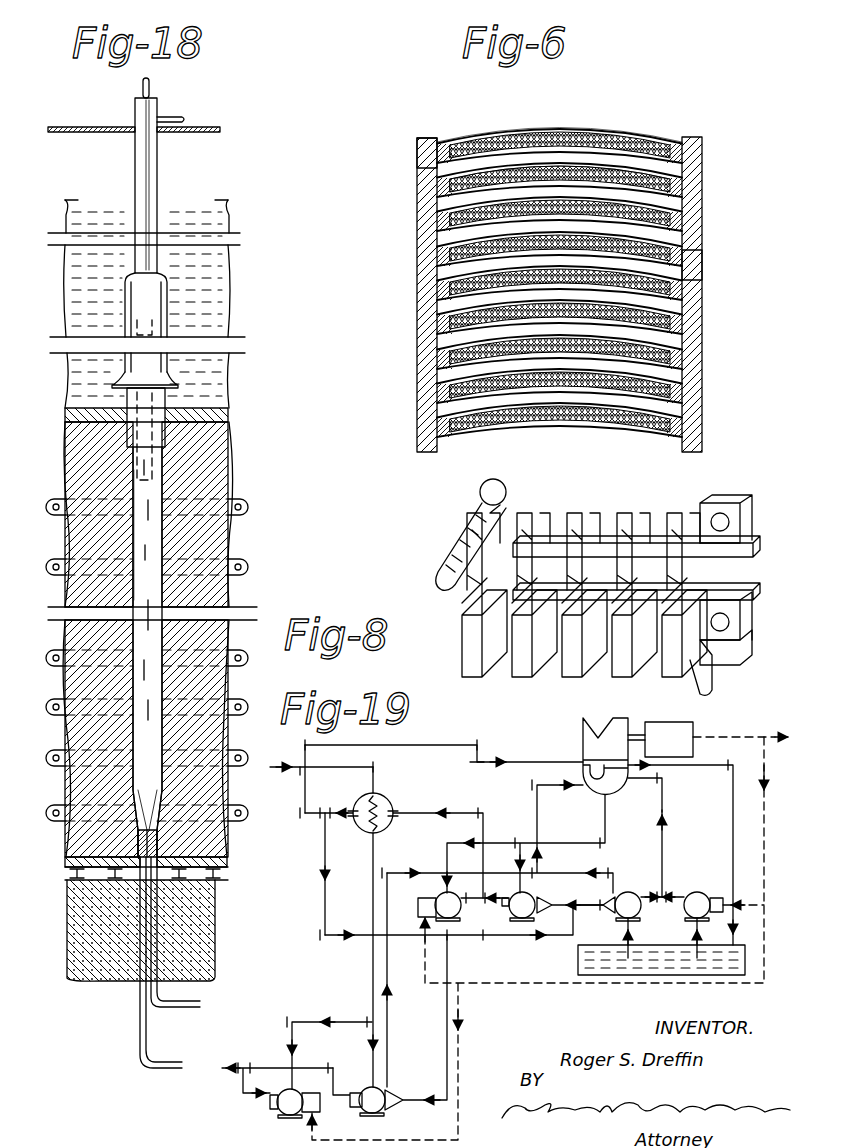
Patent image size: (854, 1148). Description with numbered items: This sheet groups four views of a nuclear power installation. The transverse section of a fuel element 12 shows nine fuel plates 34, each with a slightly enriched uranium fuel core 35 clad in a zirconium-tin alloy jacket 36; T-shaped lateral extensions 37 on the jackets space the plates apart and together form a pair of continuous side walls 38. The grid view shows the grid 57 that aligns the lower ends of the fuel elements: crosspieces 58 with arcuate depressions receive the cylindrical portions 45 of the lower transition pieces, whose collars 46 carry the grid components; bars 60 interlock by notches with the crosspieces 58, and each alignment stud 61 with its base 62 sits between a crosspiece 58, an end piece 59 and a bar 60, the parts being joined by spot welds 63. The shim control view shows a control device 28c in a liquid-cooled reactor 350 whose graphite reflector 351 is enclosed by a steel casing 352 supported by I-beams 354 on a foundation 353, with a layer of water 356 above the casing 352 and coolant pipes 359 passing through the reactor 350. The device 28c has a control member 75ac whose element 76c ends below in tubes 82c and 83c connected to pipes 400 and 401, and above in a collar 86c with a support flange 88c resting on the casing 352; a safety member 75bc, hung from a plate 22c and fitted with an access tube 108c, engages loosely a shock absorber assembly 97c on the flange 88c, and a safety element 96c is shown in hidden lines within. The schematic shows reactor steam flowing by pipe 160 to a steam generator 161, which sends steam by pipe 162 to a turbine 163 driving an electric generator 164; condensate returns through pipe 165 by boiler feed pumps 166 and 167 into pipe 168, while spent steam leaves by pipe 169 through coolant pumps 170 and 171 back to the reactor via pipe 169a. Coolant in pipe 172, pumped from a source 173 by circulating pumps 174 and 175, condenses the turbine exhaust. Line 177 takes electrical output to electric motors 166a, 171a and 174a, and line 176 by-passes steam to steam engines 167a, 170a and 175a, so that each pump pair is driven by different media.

In FIG. 6, the fuel element 12 is at (702, 125).
In FIG. 6, the fuel plate 34 is at (593, 128).
In FIG. 6, the fuel core 35 is at (536, 172).
In FIG. 6, the zirconium-tin alloy jacket 36 is at (470, 142).
In FIG. 6, the lateral extension 37 is at (701, 201).
In FIG. 6, the side wall 38 is at (705, 281).
In FIG. 8, the cylindrical portion 45 is at (505, 492).
In FIG. 8, the collar 46 is at (440, 562).
In FIG. 8, the grid 57 is at (612, 508).
In FIG. 8, the crosspiece 58 is at (648, 512).
In FIG. 8, the end piece 59 is at (742, 669).
In FIG. 8, the bar 60 is at (735, 592).
In FIG. 8, the alignment stud 61 is at (722, 513).
In FIG. 8, the base 62 is at (742, 506).
In FIG. 8, the spot weld 63 is at (750, 541).
In FIG. 18, the plate 22c is at (56, 113).
In FIG. 18, the tube 108c is at (172, 117).
In FIG. 18, the control device 28c is at (132, 177).
In FIG. 18, the liquid-cooled neutronic reactor 350 is at (234, 283).
In FIG. 18, the water 356 is at (66, 286).
In FIG. 18, the safety member 75bc is at (118, 298).
In FIG. 18, the shock absorber assembly 97c is at (132, 395).
In FIG. 18, the support flange 88c is at (130, 410).
In FIG. 18, the casing 352 is at (228, 410).
In FIG. 18, the collar 86c is at (132, 432).
In FIG. 18, the safety element 96c is at (148, 466).
In FIG. 18, the graphite reflector 351 is at (215, 470).
In FIG. 18, the control member 75ac is at (126, 536).
In FIG. 18, the coolant pipes 359 is at (238, 560).
In FIG. 18, the element 76c is at (140, 672).
In FIG. 18, the tube 83c is at (140, 838).
In FIG. 18, the tube 82c is at (152, 850).
In FIG. 18, the I-beams 354 is at (72, 878).
In FIG. 18, the foundation 353 is at (80, 924).
In FIG. 18, the pipe 401 is at (140, 1012).
In FIG. 18, the pipe 400 is at (164, 1010).
In FIG. 19, the pipe 160 is at (331, 769).
In FIG. 19, the steam generator 161 is at (386, 801).
In FIG. 19, the pipe 162 is at (396, 747).
In FIG. 19, the turbine 163 is at (582, 745).
In FIG. 19, the electric generator 164 is at (690, 737).
In FIG. 19, the pipe 165 is at (609, 836).
In FIG. 19, the boiler feed pump 166 is at (455, 913).
In FIG. 19, the electric motor 166a is at (430, 893).
In FIG. 19, the boiler feed pump 167 is at (516, 900).
In FIG. 19, the steam engine 167a is at (542, 906).
In FIG. 19, the pipe 168 is at (452, 814).
In FIG. 19, the pipe 169 is at (362, 926).
In FIG. 19, the pipe 169a is at (234, 1068).
In FIG. 19, the coolant pump 170 is at (365, 1108).
In FIG. 19, the steam engine 170a is at (396, 1092).
In FIG. 19, the coolant pump 171 is at (280, 1108).
In FIG. 19, the electric motor 171a is at (330, 1089).
In FIG. 19, the pipe 172 is at (665, 813).
In FIG. 19, the source 173 is at (585, 965).
In FIG. 19, the circulating pump 174 is at (698, 917).
In FIG. 19, the electric motor 174a is at (718, 897).
In FIG. 19, the circulating pump 175 is at (622, 899).
In FIG. 19, the steam engine 175a is at (616, 915).
In FIG. 19, the line 176 is at (326, 863).
In FIG. 19, the line 177 is at (756, 989).